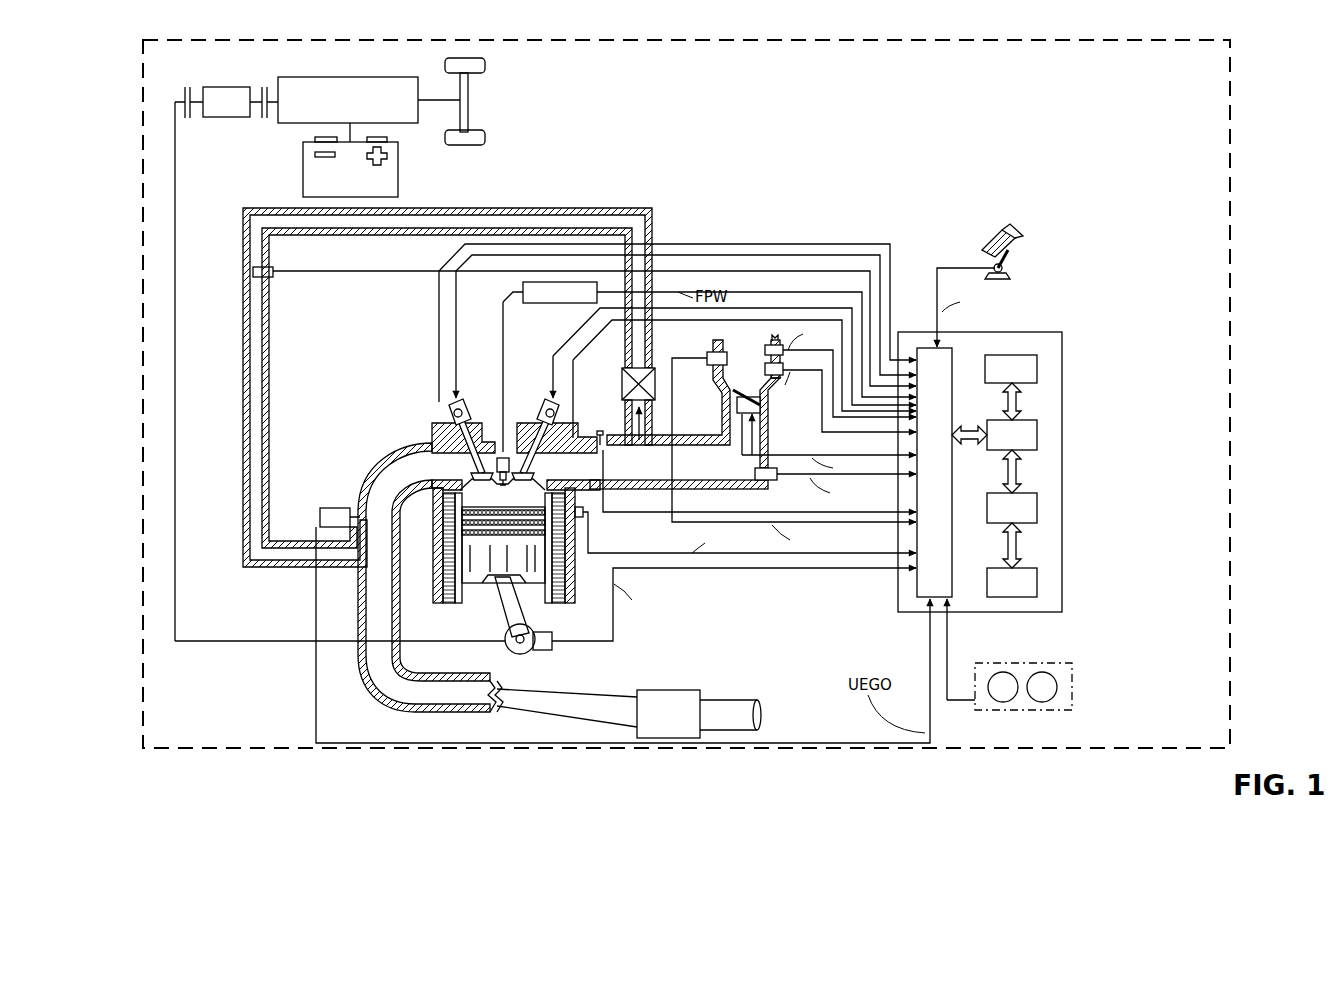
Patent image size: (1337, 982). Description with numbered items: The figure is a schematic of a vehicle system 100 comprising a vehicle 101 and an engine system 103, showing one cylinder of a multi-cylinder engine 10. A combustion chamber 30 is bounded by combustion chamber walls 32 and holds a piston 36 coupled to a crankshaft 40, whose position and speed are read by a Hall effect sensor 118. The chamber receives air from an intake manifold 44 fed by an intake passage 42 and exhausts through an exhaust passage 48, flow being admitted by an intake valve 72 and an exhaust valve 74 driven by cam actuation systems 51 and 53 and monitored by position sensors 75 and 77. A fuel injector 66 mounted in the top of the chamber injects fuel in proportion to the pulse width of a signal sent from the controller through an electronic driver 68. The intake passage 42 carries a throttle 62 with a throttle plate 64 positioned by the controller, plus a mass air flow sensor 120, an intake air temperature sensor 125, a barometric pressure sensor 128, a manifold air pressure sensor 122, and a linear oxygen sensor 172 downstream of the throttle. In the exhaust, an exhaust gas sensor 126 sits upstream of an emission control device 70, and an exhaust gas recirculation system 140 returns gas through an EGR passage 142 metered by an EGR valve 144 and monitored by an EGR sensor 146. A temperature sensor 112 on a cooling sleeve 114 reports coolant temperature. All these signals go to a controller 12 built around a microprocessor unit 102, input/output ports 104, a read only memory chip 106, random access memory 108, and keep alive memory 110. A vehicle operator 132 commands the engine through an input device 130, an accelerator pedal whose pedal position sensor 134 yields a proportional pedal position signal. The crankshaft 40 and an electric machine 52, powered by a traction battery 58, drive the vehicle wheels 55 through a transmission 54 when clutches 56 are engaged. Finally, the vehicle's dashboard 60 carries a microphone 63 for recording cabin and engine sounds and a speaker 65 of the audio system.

The engine 10 is at (386, 391).
The controller 12 is at (1004, 464).
The combustion chamber 30 is at (435, 556).
The combustion chamber walls 32 is at (462, 601).
The piston 36 is at (497, 567).
The crankshaft 40 is at (508, 650).
The intake passage 42 is at (806, 414).
The intake manifold 44 is at (753, 436).
The exhaust passage 48 is at (497, 585).
The cam actuation system 51 is at (548, 396).
The electric machine 52 is at (228, 117).
The cam actuation system 53 is at (463, 396).
The transmission 54 is at (398, 123).
The vehicle wheels 55 is at (470, 145).
The clutches 56 is at (185, 92).
The traction battery 58 is at (398, 175).
The dashboard 60 is at (1014, 665).
The throttle 62 is at (757, 398).
The microphone 63 is at (1045, 703).
The throttle plate 64 is at (735, 398).
The speaker 65 is at (1003, 703).
The fuel injector 66 is at (507, 456).
The electronic driver 68 is at (578, 303).
The emission control device 70 is at (699, 714).
The intake valve 72 is at (540, 470).
The exhaust valve 74 is at (437, 452).
The position sensor 75 is at (562, 412).
The position sensor 77 is at (449, 408).
The vehicle system 100 is at (1130, 206).
The vehicle 101 is at (1232, 445).
The microprocessor unit 102 is at (1037, 435).
The engine system 103 is at (834, 217).
The input/output ports 104 is at (955, 355).
The read only memory chip 106 is at (1037, 368).
The random access memory 108 is at (1037, 508).
The keep alive memory 110 is at (1037, 582).
The temperature sensor 112 is at (584, 516).
The cooling sleeve 114 is at (566, 572).
The Hall effect sensor 118 is at (548, 650).
The mass air flow sensor 120 is at (768, 345).
The manifold air pressure sensor 122 is at (778, 480).
The intake air temperature sensor 125 is at (765, 367).
The exhaust gas sensor 126 is at (320, 512).
The barometric pressure sensor 128 is at (708, 356).
The input device 130 is at (1024, 281).
The vehicle operator 132 is at (1024, 238).
The pedal position sensor 134 is at (1010, 272).
The exhaust gas recirculation system 140 is at (556, 198).
The EGR passage 142 is at (440, 210).
The EGR valve 144 is at (622, 388).
The EGR sensor 146 is at (270, 277).
The linear oxygen sensor 172 is at (605, 442).